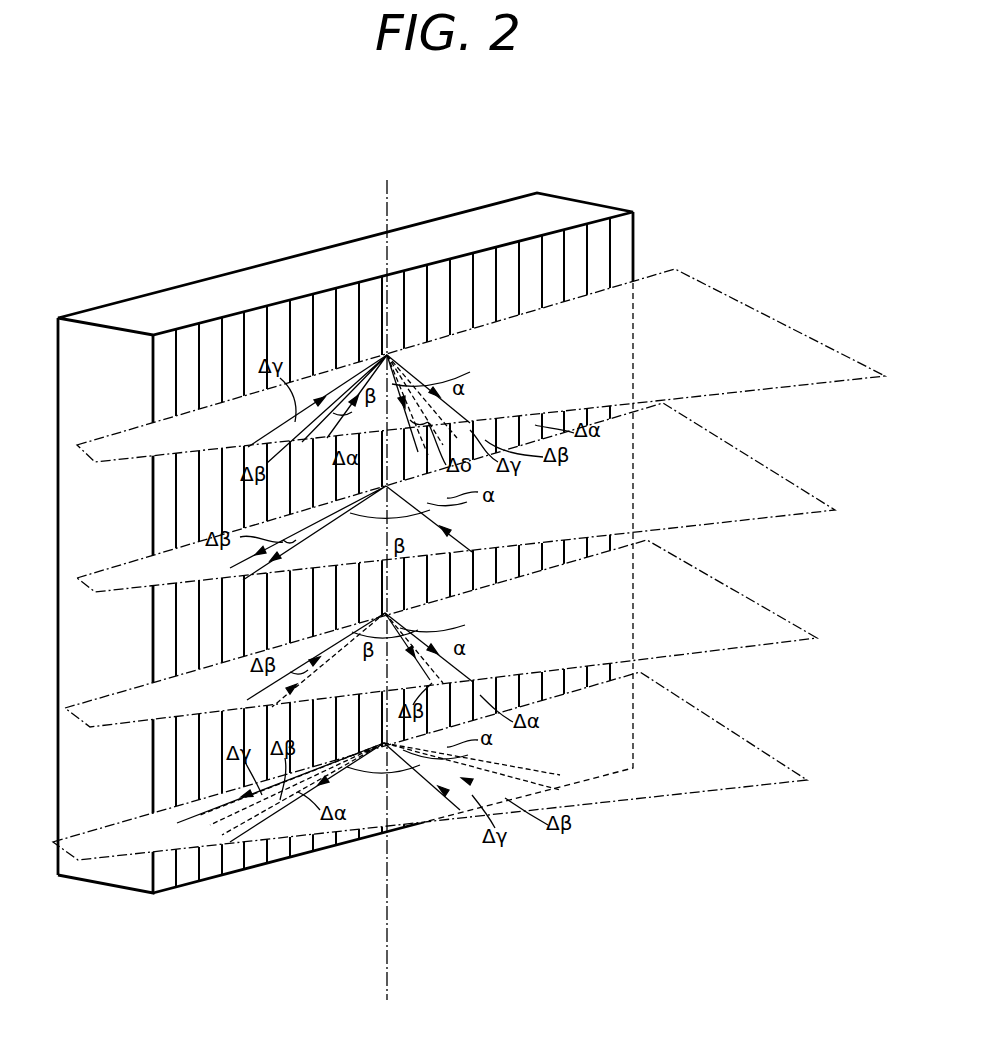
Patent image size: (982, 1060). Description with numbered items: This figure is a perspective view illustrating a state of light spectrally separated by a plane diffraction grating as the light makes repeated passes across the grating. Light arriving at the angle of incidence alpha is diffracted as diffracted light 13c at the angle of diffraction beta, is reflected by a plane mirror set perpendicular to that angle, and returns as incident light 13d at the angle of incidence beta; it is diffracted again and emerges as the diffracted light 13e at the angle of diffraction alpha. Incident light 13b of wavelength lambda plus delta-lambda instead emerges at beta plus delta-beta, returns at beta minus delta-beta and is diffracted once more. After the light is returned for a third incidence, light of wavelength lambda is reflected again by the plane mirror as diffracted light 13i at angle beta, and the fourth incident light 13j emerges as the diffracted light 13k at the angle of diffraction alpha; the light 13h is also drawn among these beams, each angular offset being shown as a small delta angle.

The incident light 13b is at (463, 542).
The diffracted light 13c is at (292, 547).
The incident light 13d is at (270, 685).
The diffracted light 13e is at (463, 667).
The light ray 13h is at (462, 812).
The diffracted light 13i is at (297, 800).
The fourth incident light 13j is at (270, 433).
The diffracted light 13k is at (465, 412).